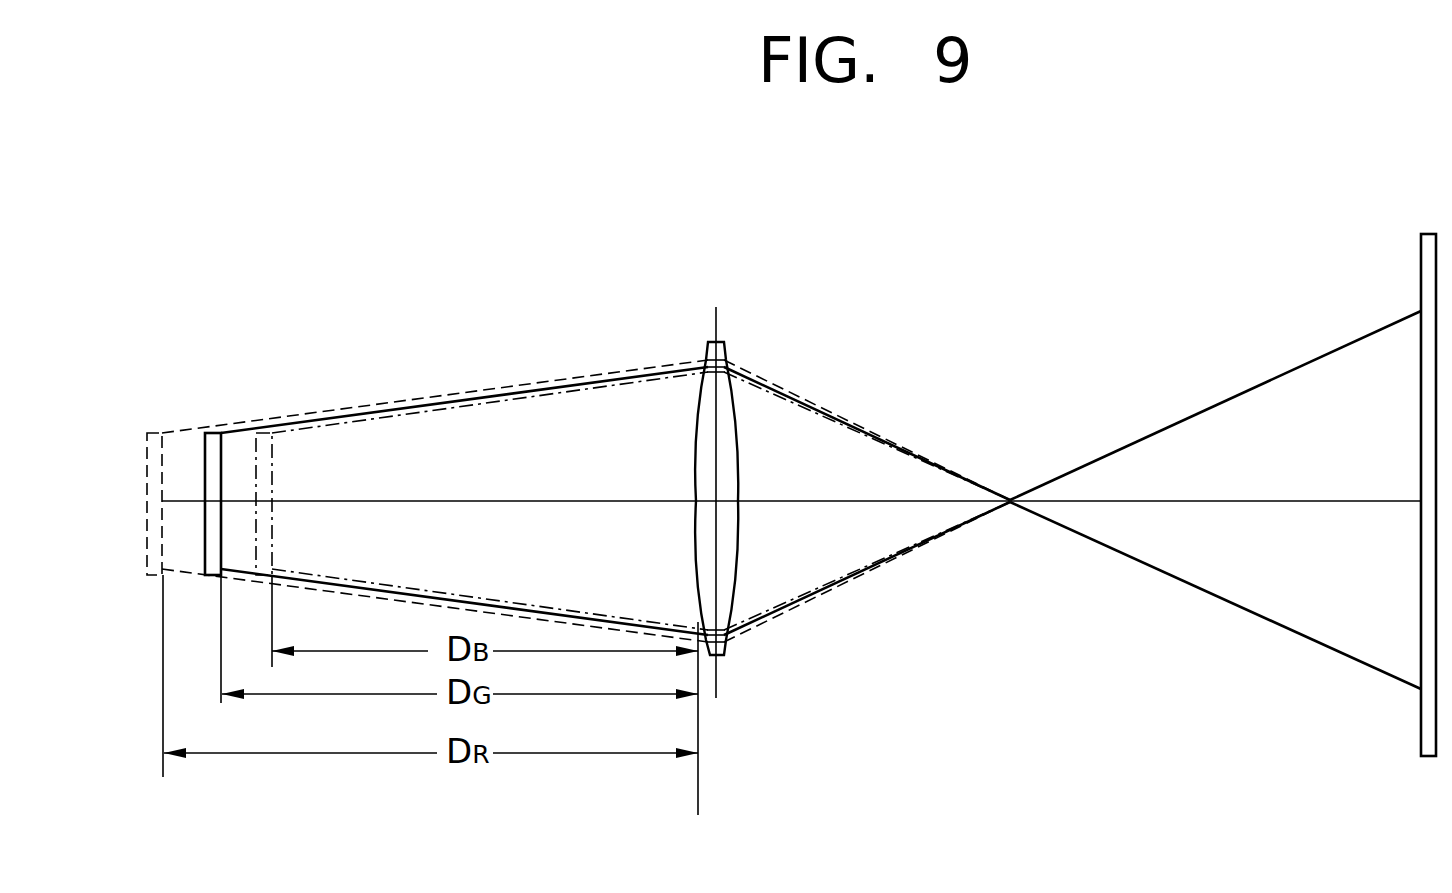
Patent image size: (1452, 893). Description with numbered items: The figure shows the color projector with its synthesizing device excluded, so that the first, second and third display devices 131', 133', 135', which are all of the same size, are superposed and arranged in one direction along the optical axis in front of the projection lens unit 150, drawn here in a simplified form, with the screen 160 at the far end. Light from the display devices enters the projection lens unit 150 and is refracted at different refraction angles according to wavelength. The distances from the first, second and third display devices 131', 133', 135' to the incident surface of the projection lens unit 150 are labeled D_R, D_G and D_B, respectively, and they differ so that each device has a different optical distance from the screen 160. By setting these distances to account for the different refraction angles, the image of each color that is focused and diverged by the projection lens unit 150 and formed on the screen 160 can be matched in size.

The first display device 131' is at (138, 564).
The second display device 133' is at (220, 504).
The third display device 135' is at (295, 506).
The projection lens unit 150 is at (725, 655).
The screen 160 is at (1428, 726).